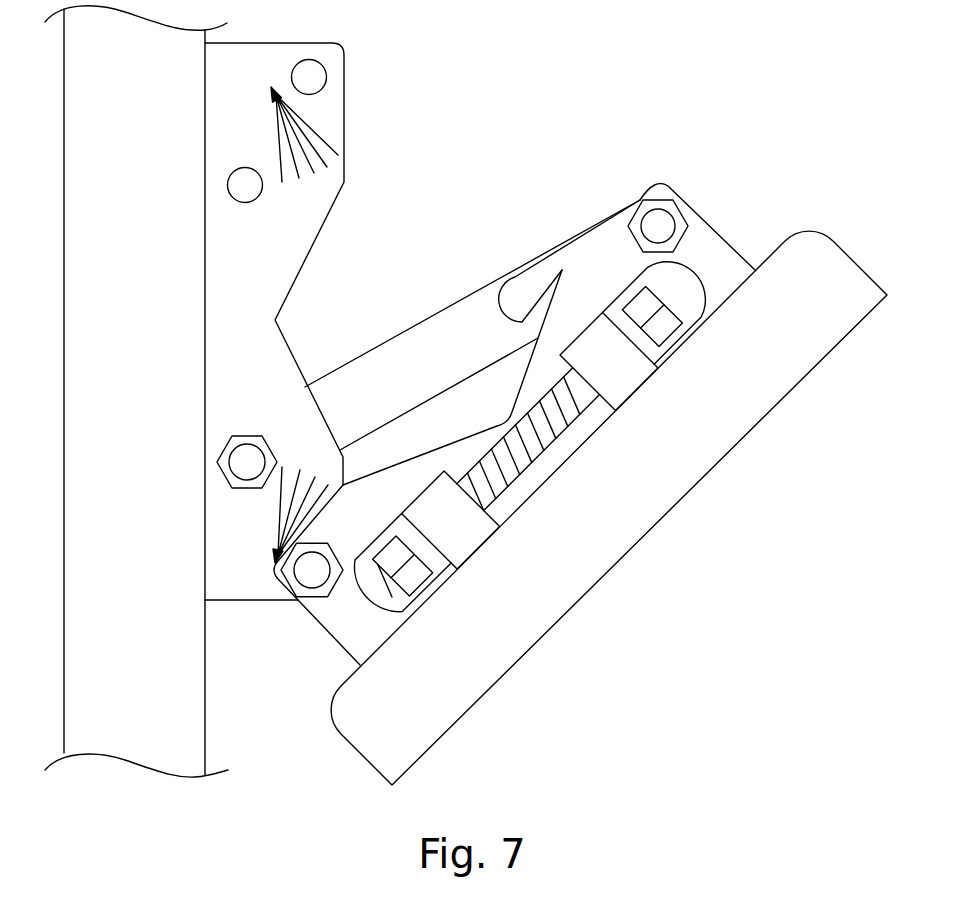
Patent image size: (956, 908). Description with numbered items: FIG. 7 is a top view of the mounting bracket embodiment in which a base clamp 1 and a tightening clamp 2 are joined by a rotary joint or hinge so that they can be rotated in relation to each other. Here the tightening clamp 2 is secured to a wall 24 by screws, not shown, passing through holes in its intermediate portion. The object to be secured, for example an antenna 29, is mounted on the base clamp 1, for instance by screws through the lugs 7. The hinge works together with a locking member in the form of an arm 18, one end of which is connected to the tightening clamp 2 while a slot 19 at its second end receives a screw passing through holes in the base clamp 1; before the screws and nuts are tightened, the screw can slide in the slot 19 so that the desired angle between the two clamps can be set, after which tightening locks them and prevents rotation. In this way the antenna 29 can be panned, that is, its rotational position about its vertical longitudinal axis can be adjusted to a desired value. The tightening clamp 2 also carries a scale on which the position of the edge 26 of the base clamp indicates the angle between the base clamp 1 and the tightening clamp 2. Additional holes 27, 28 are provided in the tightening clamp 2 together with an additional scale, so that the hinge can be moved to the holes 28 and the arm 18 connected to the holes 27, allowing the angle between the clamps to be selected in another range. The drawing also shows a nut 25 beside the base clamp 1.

The base clamp 1 is at (715, 263).
The tightening clamp 2 is at (266, 344).
The lugs 7 is at (650, 353).
The arm 18 is at (447, 340).
The slot 19 is at (532, 295).
The wall 24 is at (132, 697).
The nut 25 is at (278, 503).
The edge 26 is at (318, 527).
The holes 27 is at (243, 196).
The holes 28 is at (308, 77).
The antenna 29 is at (818, 287).